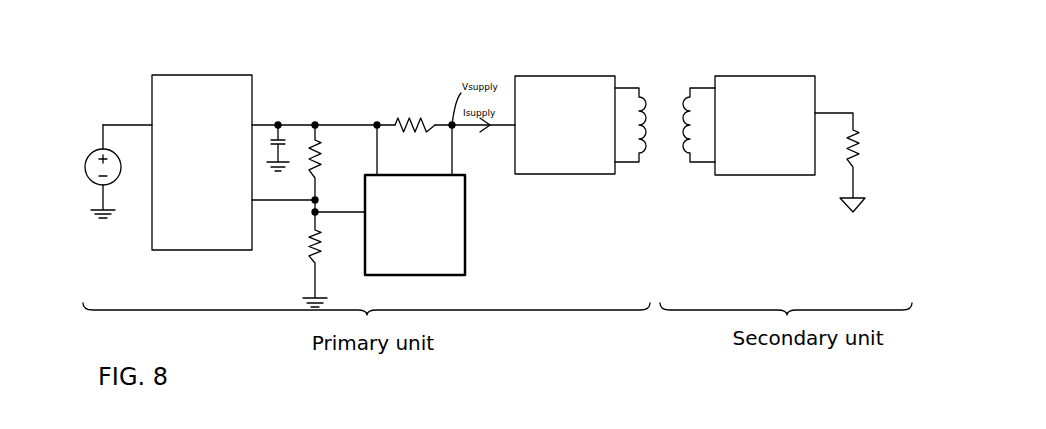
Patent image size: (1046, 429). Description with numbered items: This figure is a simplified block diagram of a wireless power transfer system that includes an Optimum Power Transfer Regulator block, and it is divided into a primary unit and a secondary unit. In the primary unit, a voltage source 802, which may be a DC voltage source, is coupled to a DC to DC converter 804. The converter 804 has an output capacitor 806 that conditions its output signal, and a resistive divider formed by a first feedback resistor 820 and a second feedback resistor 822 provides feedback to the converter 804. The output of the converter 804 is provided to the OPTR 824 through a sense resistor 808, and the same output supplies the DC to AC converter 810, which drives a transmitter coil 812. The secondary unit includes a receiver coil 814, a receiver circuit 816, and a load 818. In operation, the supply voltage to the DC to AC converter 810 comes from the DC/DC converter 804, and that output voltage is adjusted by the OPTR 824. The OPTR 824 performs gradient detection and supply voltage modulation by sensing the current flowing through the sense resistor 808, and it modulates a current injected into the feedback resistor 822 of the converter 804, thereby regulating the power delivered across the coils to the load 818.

The voltage source 802 is at (97, 147).
The DC to DC converter 804 is at (187, 73).
The output capacitor 806 is at (290, 137).
The sense resistor 808 is at (435, 113).
The DC to AC converter 810 is at (560, 73).
The transmitter coil 812 is at (642, 100).
The receiver coil 814 is at (677, 100).
The receiver circuit 816 is at (752, 70).
The load 818 is at (870, 157).
The feedback resistor 820 is at (322, 143).
The feedback resistor 822 is at (327, 260).
The Optimum Power Transfer Regulator 824 is at (473, 240).